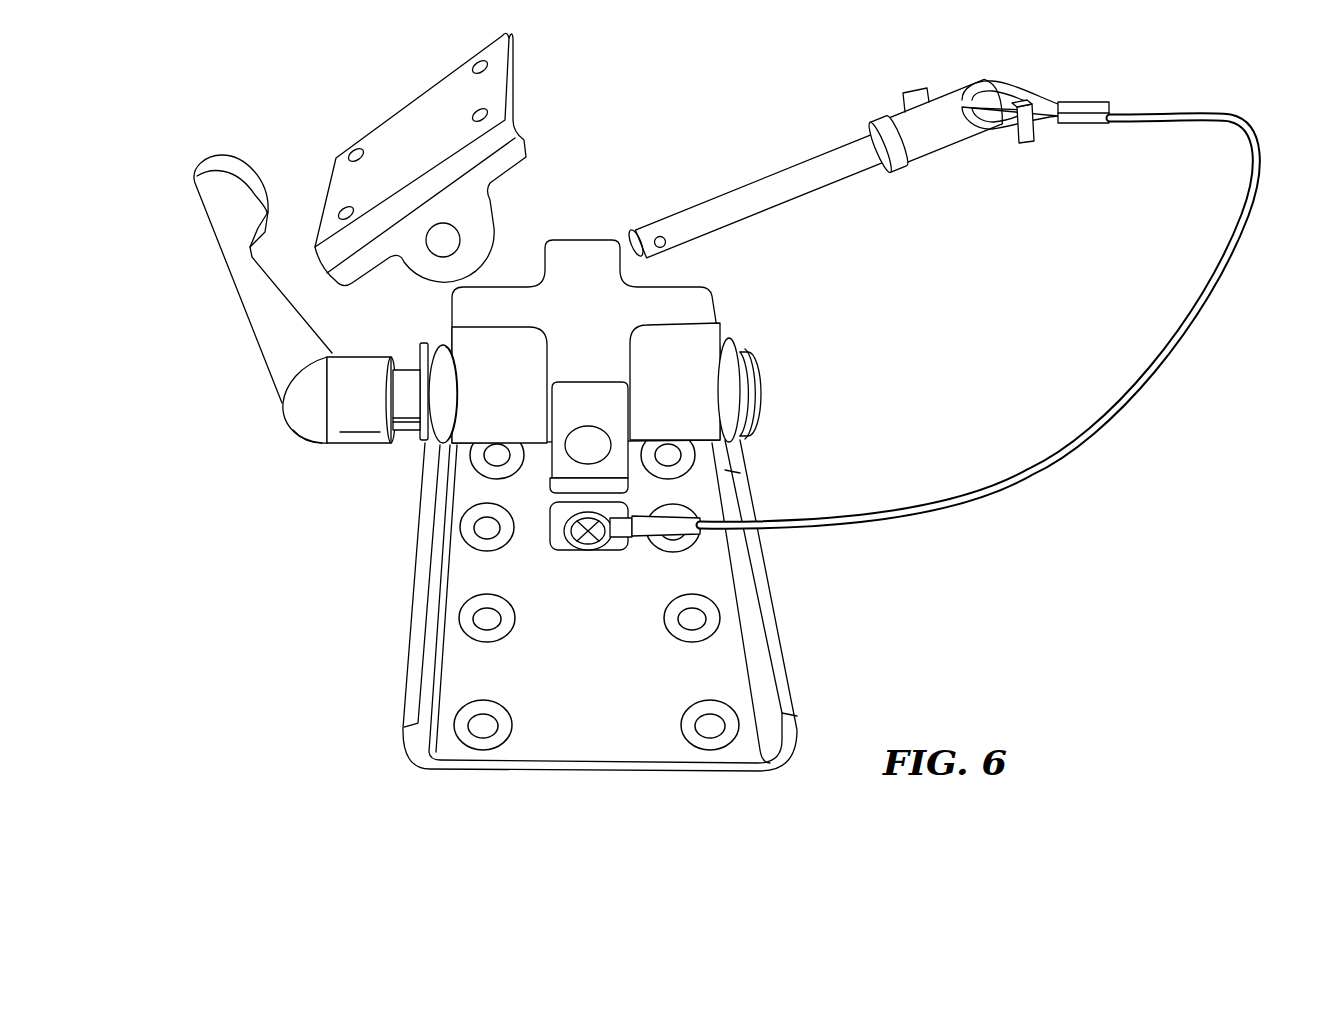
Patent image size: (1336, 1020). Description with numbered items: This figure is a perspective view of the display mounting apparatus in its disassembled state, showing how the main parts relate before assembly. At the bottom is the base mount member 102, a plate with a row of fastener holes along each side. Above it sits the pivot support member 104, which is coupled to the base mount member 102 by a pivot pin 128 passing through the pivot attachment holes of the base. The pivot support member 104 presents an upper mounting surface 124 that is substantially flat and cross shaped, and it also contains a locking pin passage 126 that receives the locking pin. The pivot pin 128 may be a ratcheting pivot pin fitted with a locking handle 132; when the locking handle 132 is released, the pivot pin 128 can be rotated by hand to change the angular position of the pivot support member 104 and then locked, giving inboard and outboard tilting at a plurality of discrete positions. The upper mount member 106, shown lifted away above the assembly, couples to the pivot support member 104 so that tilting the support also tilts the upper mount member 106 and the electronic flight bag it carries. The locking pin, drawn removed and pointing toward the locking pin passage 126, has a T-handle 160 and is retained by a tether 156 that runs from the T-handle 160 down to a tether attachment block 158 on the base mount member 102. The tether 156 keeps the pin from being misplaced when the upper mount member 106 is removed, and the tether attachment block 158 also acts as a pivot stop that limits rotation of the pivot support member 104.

The base mount member 102 is at (443, 743).
The pivot support member 104 is at (640, 366).
The upper mount member 106 is at (510, 91).
The upper mounting surface 124 is at (712, 308).
The locking pin passage 126 is at (603, 413).
The pivot pin 128 is at (763, 380).
The locking handle 132 is at (263, 323).
The tether 156 is at (1021, 476).
The tether attachment block 158 is at (582, 548).
The T-handle 160 is at (920, 88).